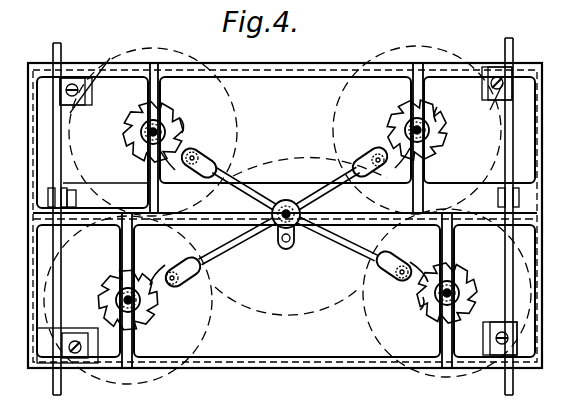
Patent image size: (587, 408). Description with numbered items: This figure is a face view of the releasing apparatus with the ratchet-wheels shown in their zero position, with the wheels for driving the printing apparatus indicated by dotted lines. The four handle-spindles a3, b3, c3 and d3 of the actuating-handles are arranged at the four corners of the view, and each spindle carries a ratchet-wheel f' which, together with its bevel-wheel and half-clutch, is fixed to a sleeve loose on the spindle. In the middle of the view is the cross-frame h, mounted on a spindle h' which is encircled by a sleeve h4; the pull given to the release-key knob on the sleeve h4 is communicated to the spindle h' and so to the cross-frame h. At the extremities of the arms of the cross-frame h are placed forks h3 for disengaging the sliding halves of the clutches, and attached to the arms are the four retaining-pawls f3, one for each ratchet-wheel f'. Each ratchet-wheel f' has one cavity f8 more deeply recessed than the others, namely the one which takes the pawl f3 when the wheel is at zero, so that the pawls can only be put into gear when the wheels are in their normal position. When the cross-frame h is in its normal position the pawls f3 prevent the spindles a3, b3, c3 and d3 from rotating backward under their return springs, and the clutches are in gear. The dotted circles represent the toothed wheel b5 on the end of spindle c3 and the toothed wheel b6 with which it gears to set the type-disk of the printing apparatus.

The spindle b3 is at (148, 130).
The spindle c3 is at (430, 127).
The spindle a3 is at (117, 298).
The spindle d3 is at (463, 300).
The forks h3 is at (128, 138).
The ratchet-wheel f' is at (318, 204).
The pawl f3 is at (170, 167).
The cavity f8 is at (380, 148).
The toothed wheel b5 is at (287, 215).
The toothed wheel b6 is at (301, 225).
The cross-frame h is at (278, 216).
The spindle h' is at (244, 188).
The sleeve h4 is at (328, 238).